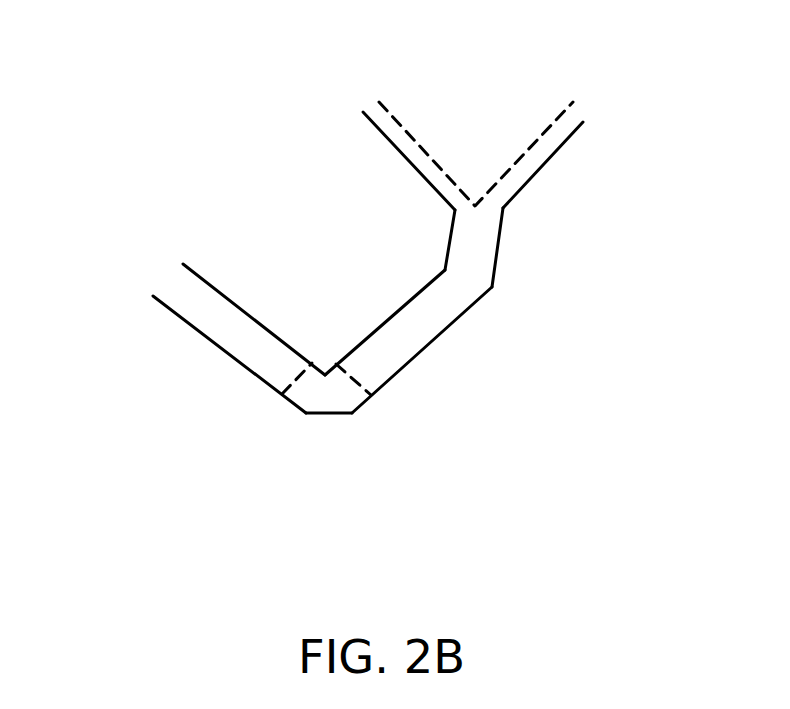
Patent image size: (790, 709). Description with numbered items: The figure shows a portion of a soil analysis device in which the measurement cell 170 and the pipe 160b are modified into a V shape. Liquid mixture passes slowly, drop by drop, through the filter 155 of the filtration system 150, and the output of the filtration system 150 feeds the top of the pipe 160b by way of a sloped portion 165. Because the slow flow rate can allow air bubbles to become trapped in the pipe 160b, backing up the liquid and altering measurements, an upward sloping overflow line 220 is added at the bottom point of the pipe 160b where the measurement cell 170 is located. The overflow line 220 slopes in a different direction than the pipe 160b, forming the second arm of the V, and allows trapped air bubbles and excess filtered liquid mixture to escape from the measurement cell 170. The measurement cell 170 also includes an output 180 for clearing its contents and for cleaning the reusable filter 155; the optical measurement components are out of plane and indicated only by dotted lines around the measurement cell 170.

The filtration system 150 is at (563, 145).
The filter 155 is at (555, 122).
The pipe 160b is at (492, 263).
The sloped portion 165 is at (453, 308).
The measurement cell 170 is at (322, 399).
The output 180 is at (332, 413).
The overflow line 220 is at (262, 352).